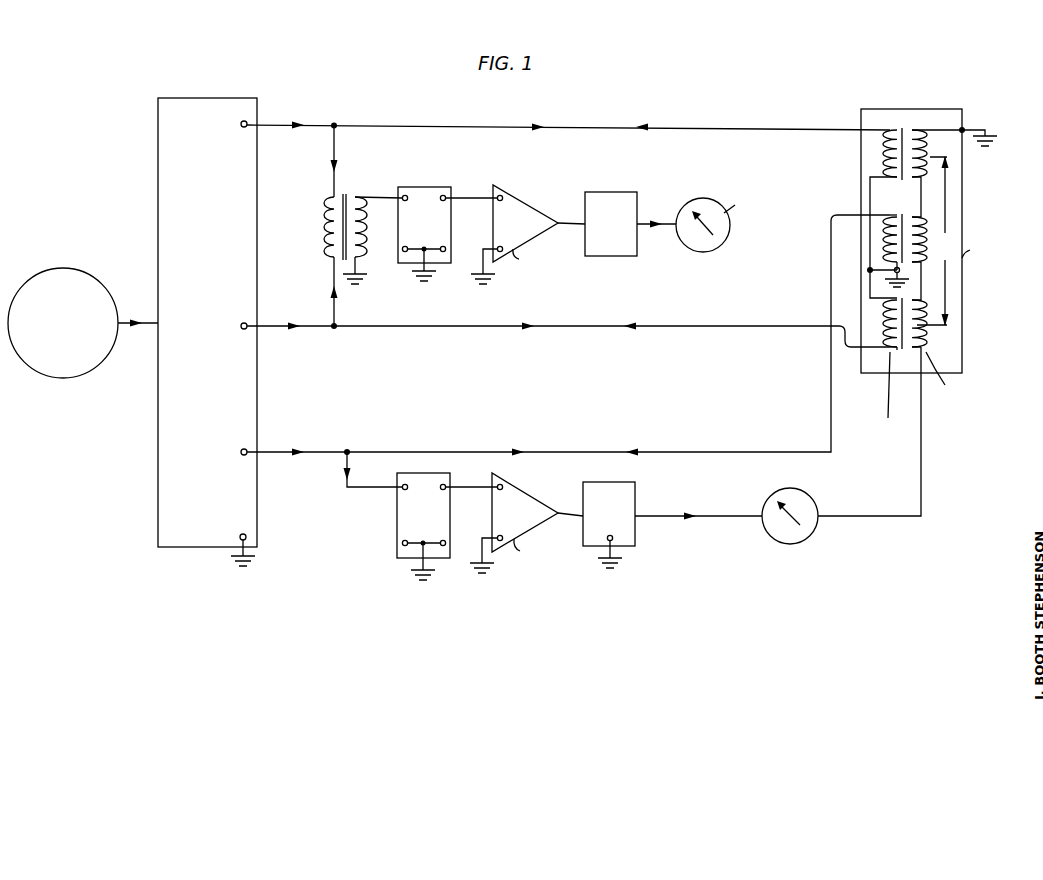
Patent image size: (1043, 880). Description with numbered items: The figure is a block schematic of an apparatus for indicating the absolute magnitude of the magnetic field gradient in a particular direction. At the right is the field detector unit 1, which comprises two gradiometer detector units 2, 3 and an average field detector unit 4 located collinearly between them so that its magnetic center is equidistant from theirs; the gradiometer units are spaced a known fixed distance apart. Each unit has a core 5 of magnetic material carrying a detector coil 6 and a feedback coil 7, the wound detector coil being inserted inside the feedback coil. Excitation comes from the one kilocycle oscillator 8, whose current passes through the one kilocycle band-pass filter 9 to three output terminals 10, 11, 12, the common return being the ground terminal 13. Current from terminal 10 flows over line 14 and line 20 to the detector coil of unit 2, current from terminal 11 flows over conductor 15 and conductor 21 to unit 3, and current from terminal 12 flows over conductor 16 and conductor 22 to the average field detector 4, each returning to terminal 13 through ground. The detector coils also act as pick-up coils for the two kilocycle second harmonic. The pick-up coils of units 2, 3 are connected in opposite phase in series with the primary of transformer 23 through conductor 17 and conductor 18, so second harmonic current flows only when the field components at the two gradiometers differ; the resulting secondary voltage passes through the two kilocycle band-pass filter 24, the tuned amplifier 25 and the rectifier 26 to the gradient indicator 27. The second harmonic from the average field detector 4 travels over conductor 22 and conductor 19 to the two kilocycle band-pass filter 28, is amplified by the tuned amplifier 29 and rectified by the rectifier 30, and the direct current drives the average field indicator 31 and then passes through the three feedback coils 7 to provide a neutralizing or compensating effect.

The field detector unit 1 is at (861, 118).
The gradiometer detector unit 2 is at (870, 182).
The gradiometer detector unit 3 is at (897, 322).
The average field detector unit 4 is at (886, 240).
The core 5 is at (905, 131).
The detector coil 6 is at (885, 150).
The feedback coil 7 is at (929, 148).
The 1 kilocycle oscillator 8 is at (96, 282).
The 1 kilocycle band-pass filter 9 is at (162, 121).
The terminal 10 is at (247, 121).
The terminal 11 is at (246, 329).
The terminal 12 is at (247, 449).
The ground terminal 13 is at (248, 537).
The line 14 is at (330, 123).
The conductor 15 is at (314, 328).
The conductor 16 is at (327, 450).
The conductor 17 is at (338, 178).
The conductor 18 is at (336, 314).
The conductor 19 is at (368, 488).
The line 20 is at (424, 125).
The conductor 21 is at (402, 327).
The conductor 22 is at (419, 452).
The transformer 23 is at (350, 196).
The 2 kilocycle band-pass filter 24 is at (440, 188).
The tuned amplifier 25 is at (520, 207).
The rectifier 26 is at (633, 196).
The gradient indicator 27 is at (726, 236).
The two kilocycle band-pass filter 28 is at (396, 534).
The tuned amplifier 29 is at (527, 508).
The rectifier 30 is at (630, 491).
The average field indicator 31 is at (812, 527).